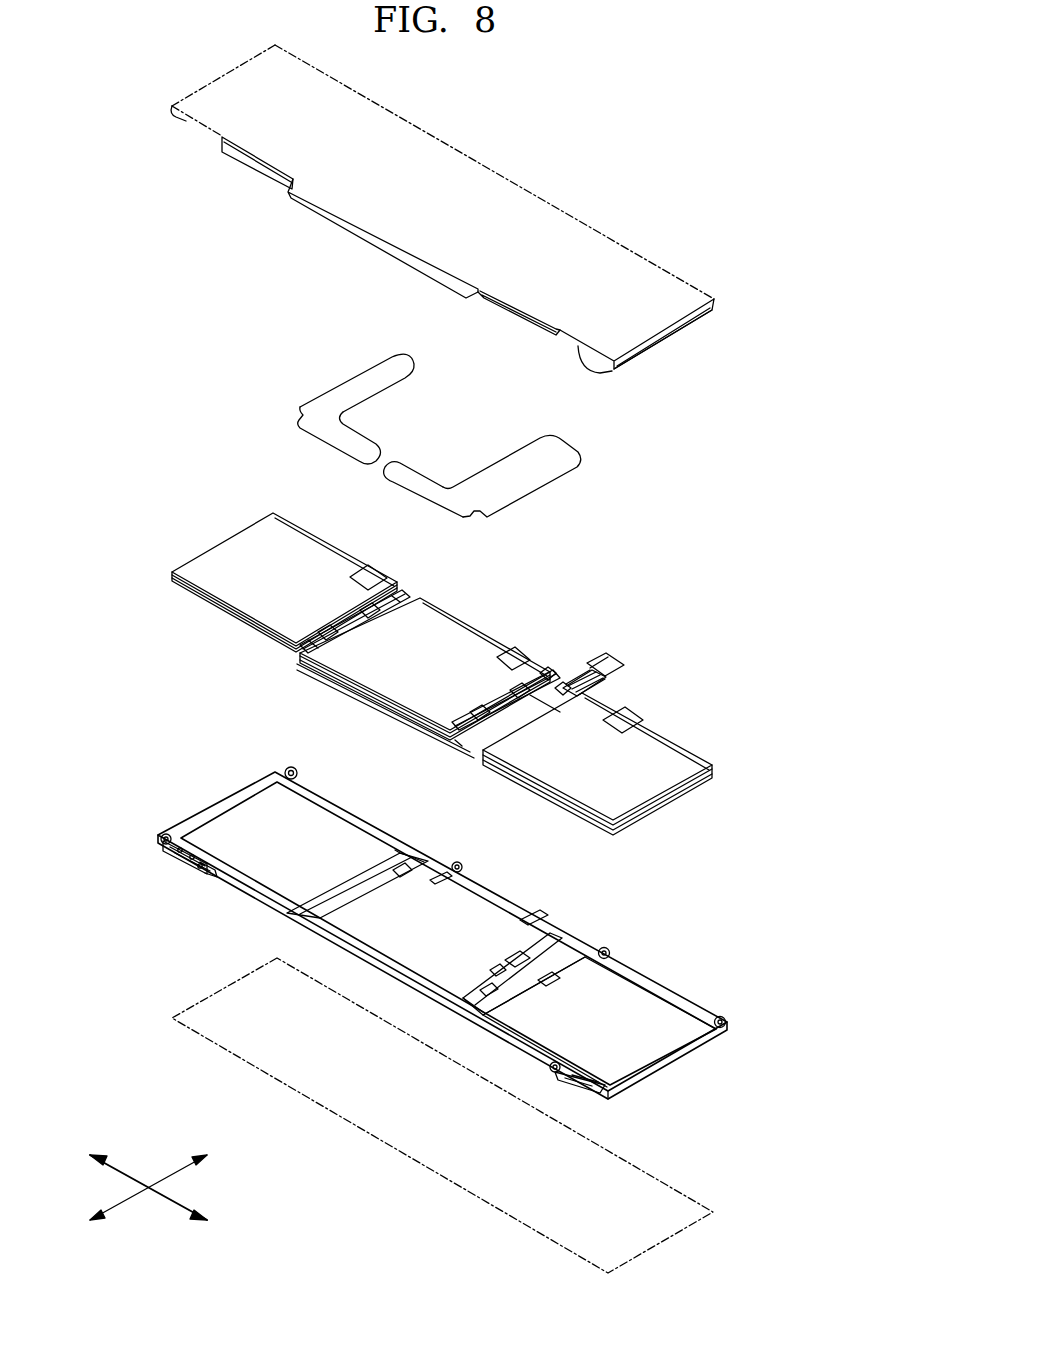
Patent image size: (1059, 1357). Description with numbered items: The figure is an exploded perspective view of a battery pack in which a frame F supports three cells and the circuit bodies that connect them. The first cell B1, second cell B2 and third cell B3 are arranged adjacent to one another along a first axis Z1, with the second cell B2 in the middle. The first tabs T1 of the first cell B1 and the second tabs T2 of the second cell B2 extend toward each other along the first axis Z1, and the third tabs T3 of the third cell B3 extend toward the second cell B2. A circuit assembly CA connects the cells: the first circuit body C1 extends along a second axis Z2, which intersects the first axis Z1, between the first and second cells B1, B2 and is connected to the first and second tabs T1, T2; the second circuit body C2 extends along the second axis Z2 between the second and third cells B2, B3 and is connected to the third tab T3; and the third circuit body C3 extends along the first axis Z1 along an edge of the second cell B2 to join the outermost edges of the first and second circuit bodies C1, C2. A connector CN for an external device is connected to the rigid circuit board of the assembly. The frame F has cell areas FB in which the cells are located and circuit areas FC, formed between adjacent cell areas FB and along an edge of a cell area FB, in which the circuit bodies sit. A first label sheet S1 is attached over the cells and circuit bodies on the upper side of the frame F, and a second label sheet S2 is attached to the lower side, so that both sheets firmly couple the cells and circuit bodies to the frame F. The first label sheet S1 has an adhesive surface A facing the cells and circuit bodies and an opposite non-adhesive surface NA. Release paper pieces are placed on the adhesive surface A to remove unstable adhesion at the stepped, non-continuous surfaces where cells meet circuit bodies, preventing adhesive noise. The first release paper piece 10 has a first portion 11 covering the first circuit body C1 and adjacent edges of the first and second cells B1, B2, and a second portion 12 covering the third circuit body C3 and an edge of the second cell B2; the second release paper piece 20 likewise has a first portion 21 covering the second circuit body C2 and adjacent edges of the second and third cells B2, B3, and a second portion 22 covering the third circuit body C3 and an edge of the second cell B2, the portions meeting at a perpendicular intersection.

The first label sheet S1 is at (228, 83).
The non-adhesive surface NA is at (627, 266).
The adhesive surface A is at (612, 372).
The second release paper piece 20 is at (366, 402).
The first portion of second release paper piece 21 is at (411, 362).
The second portion of second release paper piece 22 is at (342, 450).
The first release paper piece 10 is at (496, 481).
The first portion of first release paper piece 11 is at (562, 452).
The second portion of first release paper piece 12 is at (412, 482).
The third cell B3 is at (304, 575).
The third tab T3 is at (397, 592).
The second cell B2 is at (429, 657).
The second tab T2 is at (548, 667).
The first tab T1 is at (565, 683).
The connector CN is at (615, 657).
The first cell B1 is at (600, 729).
The second circuit body C2 is at (340, 640).
The third circuit body C3 is at (393, 705).
The circuit assembly CA is at (425, 692).
The first circuit body C1 is at (490, 731).
The frame F is at (445, 944).
The cell area FB is at (632, 1037).
The circuit area FC is at (467, 998).
The second label sheet S2 is at (230, 997).
The first axis Z1 is at (165, 1197).
The second axis Z2 is at (165, 1179).